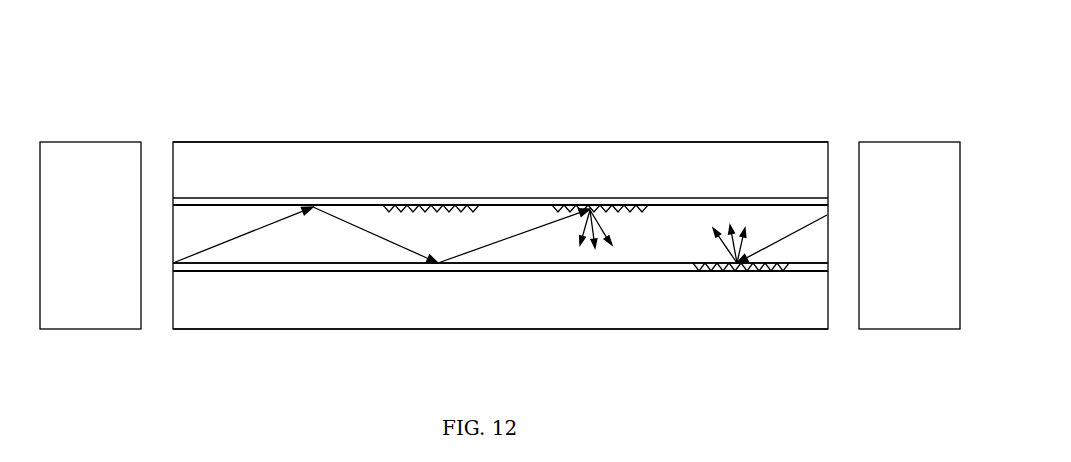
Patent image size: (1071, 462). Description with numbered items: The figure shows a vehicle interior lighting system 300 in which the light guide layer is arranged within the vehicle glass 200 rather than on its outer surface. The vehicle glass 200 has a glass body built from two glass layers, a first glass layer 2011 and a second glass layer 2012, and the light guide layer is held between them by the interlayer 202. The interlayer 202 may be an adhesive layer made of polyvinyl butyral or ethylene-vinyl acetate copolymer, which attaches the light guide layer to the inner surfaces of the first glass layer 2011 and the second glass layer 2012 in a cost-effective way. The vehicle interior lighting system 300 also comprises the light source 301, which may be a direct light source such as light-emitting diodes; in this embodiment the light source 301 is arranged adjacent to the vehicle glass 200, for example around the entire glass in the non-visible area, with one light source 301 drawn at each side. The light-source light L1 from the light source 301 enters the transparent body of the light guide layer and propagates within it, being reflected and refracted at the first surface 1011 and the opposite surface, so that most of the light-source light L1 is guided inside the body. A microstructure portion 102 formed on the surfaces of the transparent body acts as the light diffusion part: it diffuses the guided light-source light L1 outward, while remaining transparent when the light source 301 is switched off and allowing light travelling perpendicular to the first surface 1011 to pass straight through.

The vehicle interior lighting system 300 is at (430, 38).
The light source 301 is at (118, 157).
The vehicle glass 200 is at (518, 136).
The interlayer 202 is at (180, 199).
The second glass layer 2012 is at (317, 168).
The first glass layer 2011 is at (428, 317).
The first surface 1011 is at (332, 264).
The microstructure portion 102 is at (467, 210).
The light-source light L1 is at (217, 245).